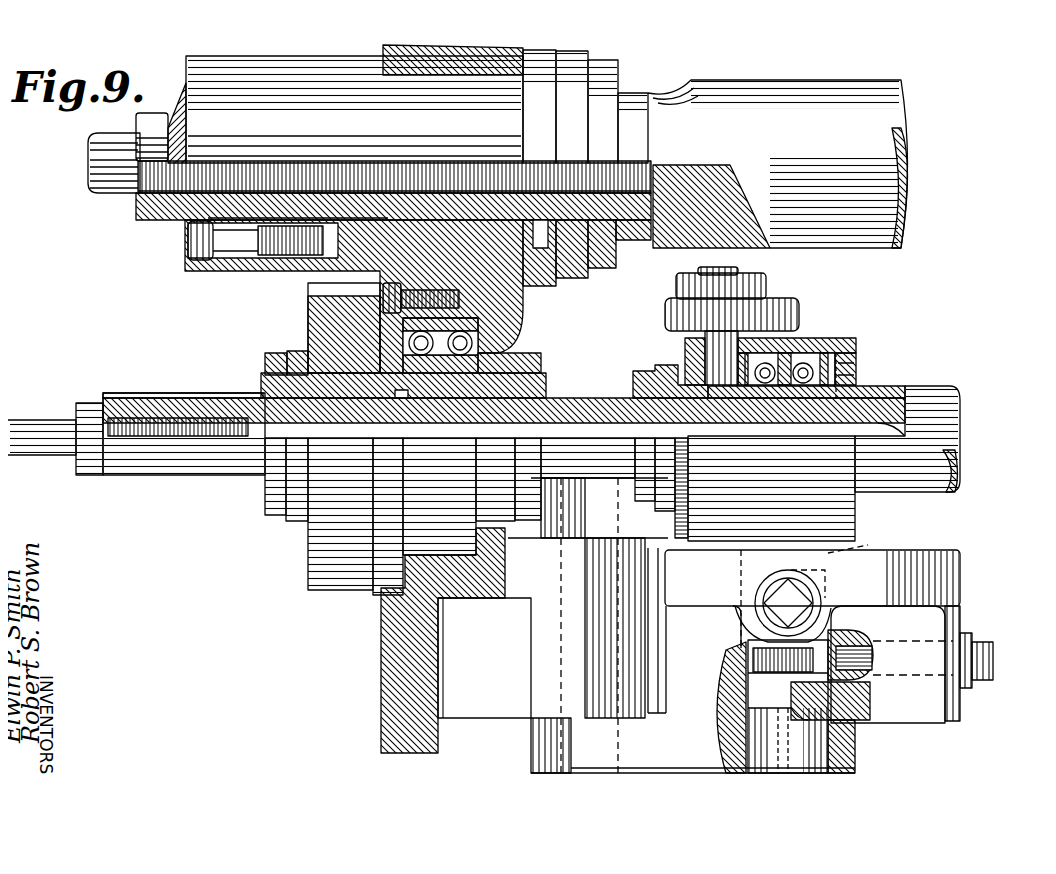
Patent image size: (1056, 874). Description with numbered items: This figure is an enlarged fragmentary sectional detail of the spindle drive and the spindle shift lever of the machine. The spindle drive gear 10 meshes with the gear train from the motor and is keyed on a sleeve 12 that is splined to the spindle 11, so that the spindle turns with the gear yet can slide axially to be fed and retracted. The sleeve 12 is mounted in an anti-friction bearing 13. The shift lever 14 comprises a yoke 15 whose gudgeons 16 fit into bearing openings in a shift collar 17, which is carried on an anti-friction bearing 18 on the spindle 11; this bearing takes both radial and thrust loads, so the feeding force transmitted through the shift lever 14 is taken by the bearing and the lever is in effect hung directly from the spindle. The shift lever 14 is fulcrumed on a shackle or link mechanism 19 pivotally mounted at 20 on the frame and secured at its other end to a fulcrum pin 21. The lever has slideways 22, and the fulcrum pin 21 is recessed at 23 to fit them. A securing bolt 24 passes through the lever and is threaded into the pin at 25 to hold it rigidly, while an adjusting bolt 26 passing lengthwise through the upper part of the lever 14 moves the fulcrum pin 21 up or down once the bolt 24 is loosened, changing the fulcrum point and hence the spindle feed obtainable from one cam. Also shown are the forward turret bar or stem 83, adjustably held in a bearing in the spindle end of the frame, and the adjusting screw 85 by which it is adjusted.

The spindle drive gear 10 is at (305, 562).
The spindle 11 is at (946, 369).
The sleeve 12 is at (538, 384).
The anti-friction bearing 13 is at (470, 335).
The shift lever 14 is at (912, 553).
The yoke 15 is at (770, 305).
The gudgeons 16 is at (690, 341).
The shift collar 17 is at (780, 345).
The anti-friction bearing 18 is at (828, 345).
The shackle or link mechanism 19 is at (648, 760).
The pivot 20 is at (563, 770).
The fulcrum pin 21 is at (766, 752).
The slideways 22 is at (860, 722).
The recess 23 is at (780, 697).
The bolt 24 is at (852, 646).
The threaded connection 25 is at (753, 665).
The adjusting bolt 26 is at (792, 597).
The forward turret bar or stem 83 is at (882, 128).
The adjusting screw 85 is at (330, 158).